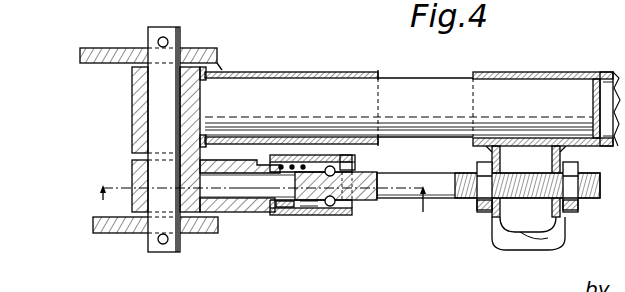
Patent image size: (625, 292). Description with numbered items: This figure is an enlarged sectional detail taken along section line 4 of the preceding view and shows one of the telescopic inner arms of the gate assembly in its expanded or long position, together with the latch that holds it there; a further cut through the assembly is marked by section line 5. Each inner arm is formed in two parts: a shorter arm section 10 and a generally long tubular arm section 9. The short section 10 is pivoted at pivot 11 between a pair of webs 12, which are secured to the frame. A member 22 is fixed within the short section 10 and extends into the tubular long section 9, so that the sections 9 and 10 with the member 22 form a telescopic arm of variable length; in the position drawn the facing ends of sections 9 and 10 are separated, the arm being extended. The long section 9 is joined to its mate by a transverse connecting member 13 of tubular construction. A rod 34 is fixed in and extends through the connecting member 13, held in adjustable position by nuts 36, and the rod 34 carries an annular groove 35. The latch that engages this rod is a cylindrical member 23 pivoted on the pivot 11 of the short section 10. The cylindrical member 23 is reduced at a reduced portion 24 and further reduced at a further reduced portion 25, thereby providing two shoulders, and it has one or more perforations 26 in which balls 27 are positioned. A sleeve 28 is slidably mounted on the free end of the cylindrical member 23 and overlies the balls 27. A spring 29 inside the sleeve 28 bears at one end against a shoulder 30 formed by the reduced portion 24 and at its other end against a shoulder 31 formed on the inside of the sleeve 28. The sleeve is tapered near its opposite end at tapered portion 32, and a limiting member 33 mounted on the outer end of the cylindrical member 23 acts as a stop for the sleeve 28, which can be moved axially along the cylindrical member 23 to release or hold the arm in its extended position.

The section line 4— 4 is at (205, 0).
The section line 5— 5 is at (255, 210).
The long arm section 9 is at (549, 72).
The short arm section 10 is at (315, 71).
The pivot 11 is at (161, 34).
The webs 12 is at (108, 63).
The connecting member 13 is at (497, 232).
The telescoping member 22 is at (405, 97).
The cylindrical member 23 is at (236, 213).
The reduced portion 24 is at (264, 212).
The further reduced portion 25 is at (296, 214).
The perforations 26 is at (320, 215).
The balls 27 is at (333, 160).
The sleeve 28 is at (316, 215).
The spring 29 is at (292, 160).
The shoulder 30 is at (268, 160).
The internal sleeve shoulder 31 is at (313, 160).
The tapered portion 32 is at (357, 162).
The limiting member 33 is at (350, 214).
The rod 34 is at (403, 199).
The annular groove 35 is at (296, 192).
The nuts 36 is at (477, 208).